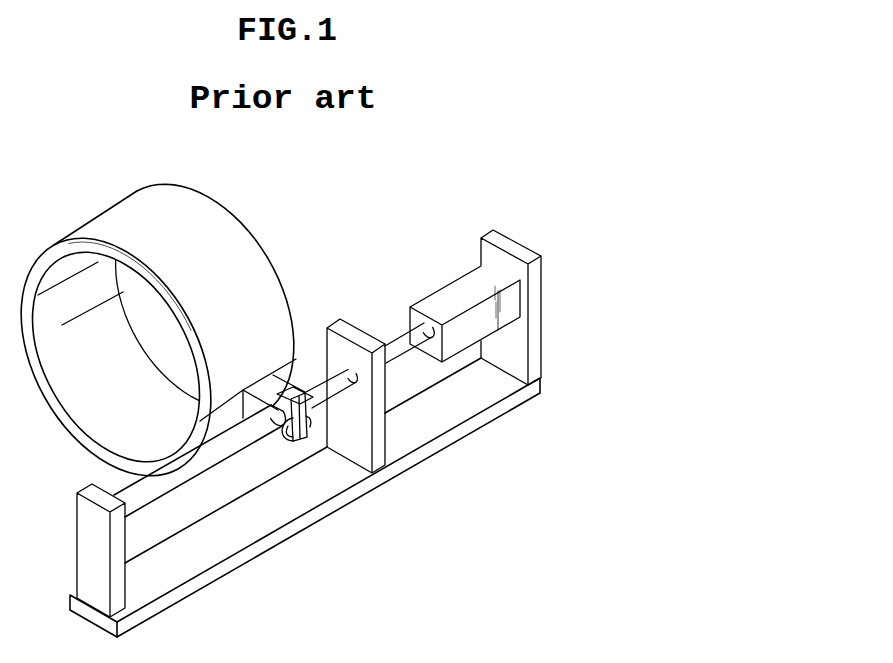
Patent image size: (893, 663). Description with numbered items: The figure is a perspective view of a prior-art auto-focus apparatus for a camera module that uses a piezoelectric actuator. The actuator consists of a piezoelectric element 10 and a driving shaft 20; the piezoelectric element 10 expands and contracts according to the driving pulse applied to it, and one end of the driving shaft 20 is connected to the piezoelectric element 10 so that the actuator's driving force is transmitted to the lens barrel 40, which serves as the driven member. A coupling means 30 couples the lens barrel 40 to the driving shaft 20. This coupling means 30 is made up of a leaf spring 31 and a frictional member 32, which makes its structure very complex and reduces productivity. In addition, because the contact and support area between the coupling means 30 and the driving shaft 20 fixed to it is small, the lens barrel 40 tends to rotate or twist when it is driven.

The piezoelectric element 10 is at (448, 290).
The driving shaft 20 is at (402, 341).
The coupling means 30 is at (302, 390).
The leaf spring 31 is at (307, 432).
The frictional member 32 is at (301, 442).
The lens barrel 40 is at (237, 254).